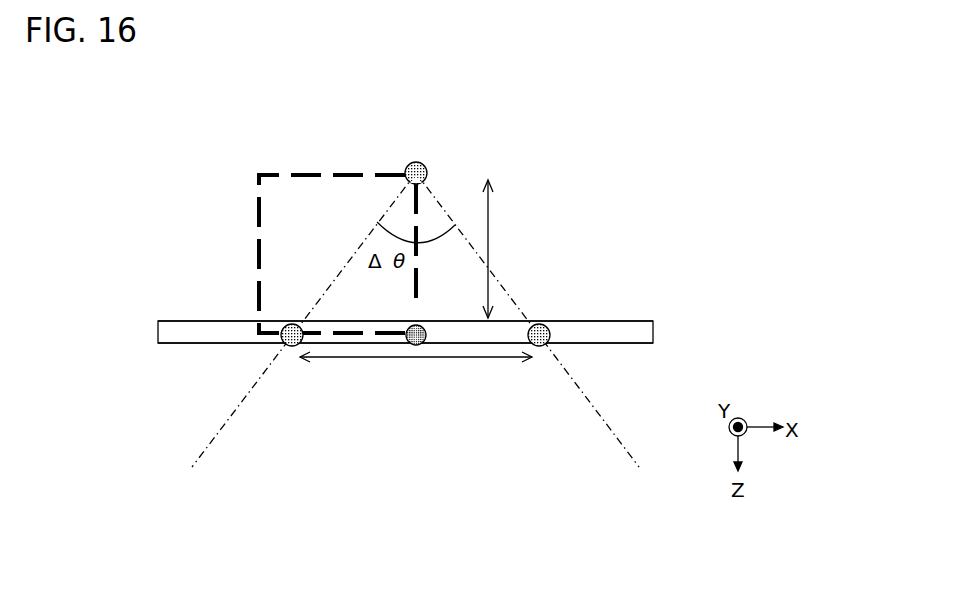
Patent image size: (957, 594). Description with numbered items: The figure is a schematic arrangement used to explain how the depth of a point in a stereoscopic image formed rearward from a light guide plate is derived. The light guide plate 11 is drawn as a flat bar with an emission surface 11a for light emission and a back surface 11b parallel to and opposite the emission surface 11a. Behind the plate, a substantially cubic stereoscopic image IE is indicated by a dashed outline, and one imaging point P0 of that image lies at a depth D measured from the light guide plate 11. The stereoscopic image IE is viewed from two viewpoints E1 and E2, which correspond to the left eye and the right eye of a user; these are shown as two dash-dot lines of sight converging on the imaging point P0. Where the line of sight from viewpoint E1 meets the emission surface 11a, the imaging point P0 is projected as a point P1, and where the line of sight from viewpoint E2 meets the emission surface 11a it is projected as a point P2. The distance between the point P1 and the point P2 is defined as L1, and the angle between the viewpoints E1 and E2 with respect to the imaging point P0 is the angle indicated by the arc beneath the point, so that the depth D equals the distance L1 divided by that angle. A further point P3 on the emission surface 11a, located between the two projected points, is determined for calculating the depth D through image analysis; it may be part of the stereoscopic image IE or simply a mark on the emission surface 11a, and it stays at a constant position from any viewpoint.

The light guide plate 11 is at (653, 332).
The emission surface 11a is at (623, 343).
The back surface 11b is at (623, 321).
The imaging point P0 is at (414, 161).
The point P1 is at (293, 347).
The point P2 is at (540, 347).
The point P3 is at (424, 328).
The stereoscopic image IE is at (340, 172).
The viewpoint E1 is at (297, 336).
The viewpoint E2 is at (534, 336).
The depth D is at (499, 249).
The distance L1 is at (416, 370).